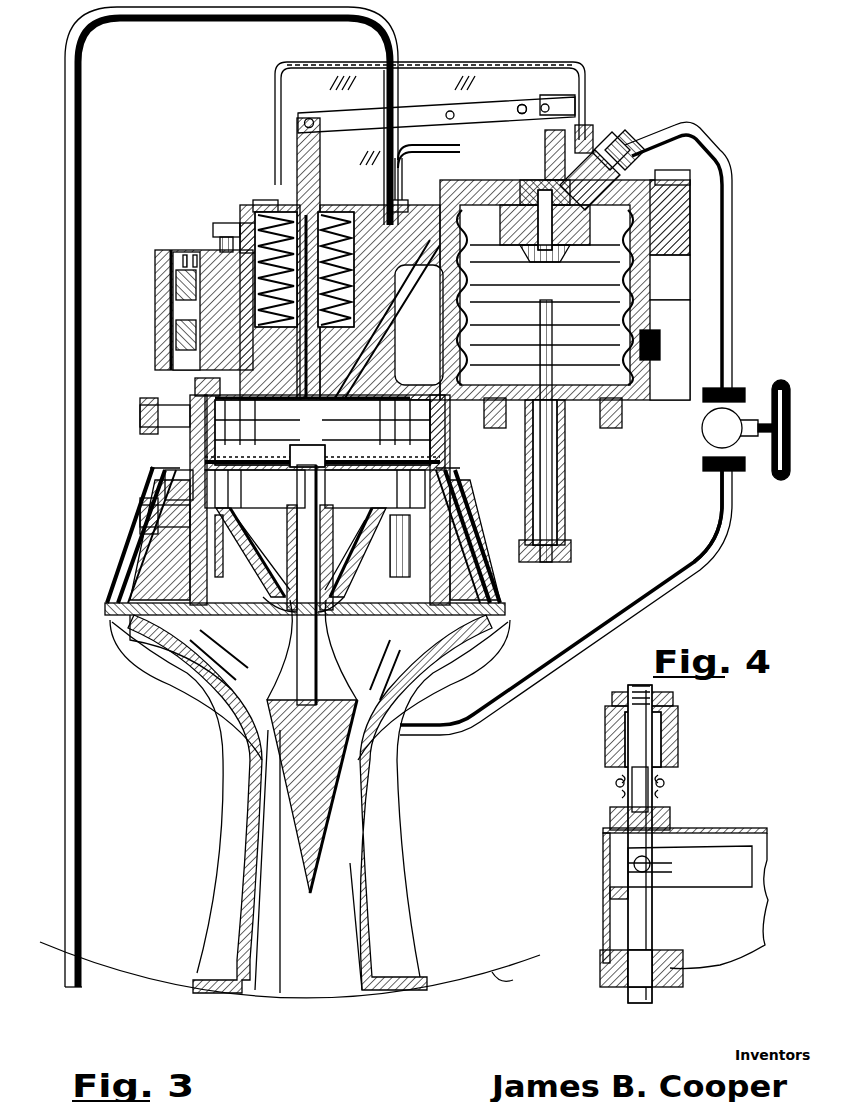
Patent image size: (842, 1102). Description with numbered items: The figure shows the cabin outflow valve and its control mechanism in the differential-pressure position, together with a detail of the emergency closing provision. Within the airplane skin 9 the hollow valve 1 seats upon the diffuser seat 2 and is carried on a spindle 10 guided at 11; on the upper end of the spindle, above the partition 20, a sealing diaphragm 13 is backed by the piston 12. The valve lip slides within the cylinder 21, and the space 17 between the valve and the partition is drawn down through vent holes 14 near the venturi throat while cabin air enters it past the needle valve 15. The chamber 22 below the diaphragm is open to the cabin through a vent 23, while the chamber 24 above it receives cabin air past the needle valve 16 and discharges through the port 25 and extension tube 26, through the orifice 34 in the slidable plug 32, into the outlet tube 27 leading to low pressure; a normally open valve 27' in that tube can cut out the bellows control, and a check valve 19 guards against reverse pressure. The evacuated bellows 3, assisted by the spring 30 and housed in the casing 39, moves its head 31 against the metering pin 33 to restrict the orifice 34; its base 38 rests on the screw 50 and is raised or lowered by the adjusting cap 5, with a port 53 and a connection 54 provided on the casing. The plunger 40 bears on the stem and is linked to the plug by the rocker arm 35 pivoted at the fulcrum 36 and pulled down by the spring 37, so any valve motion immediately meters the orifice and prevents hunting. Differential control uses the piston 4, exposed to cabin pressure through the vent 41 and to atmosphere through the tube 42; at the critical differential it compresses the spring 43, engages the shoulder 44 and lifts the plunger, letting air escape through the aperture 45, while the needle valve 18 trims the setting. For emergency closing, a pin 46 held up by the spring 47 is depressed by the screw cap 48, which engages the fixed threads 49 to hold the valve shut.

In FIG. 3, the outflow valve 1 is at (300, 775).
In FIG. 3, the diffuser seat 2 is at (240, 700).
In FIG. 3, the evacuated Sylphon bellows 3 is at (640, 370).
In FIG. 3, the piston 4 is at (196, 358).
In FIG. 3, the adjusting cap 5 is at (558, 475).
In FIG. 3, the skin of the airplane 9 is at (290, 807).
In FIG. 3, the spindle 10 is at (320, 525).
In FIG. 3, the spindle guide 11 is at (330, 580).
In FIG. 3, the piston 12 is at (260, 437).
In FIG. 3, the sealing diaphragm 13 is at (192, 452).
In FIG. 3, the vent holes 14 is at (255, 690).
In FIG. 3, the needle valve 15 is at (140, 512).
In FIG. 3, the needle valve 16 is at (140, 416).
In FIG. 3, the space above valve body 17 is at (210, 668).
In FIG. 3, the needle valve 18 is at (228, 222).
In FIG. 3, the check valve 19 is at (195, 388).
In FIG. 3, the partition 20 is at (380, 520).
In FIG. 3, the cylinder 21 is at (150, 560).
In FIG. 3, the chamber beneath diaphragm 22 is at (255, 489).
In FIG. 3, the vent 23 is at (190, 492).
In FIG. 3, the chamber above diaphragm 24 is at (325, 432).
In FIG. 3, the port 25 is at (382, 365).
In FIG. 3, the extension tube 26 is at (432, 150).
In FIG. 3, the outlet tube 27 is at (587, 428).
In FIG. 3, the normally open valve 27' is at (691, 501).
In FIG. 3, the spring 30 is at (645, 315).
In FIG. 3, the bellows head 31 is at (660, 225).
In FIG. 3, the slidable plug 32 is at (582, 75).
In FIG. 3, the metering pin 33 is at (572, 150).
In FIG. 3, the orifice 34 is at (582, 125).
In FIG. 3, the rocker arm 35 is at (358, 108).
In FIG. 4, the rocker arm 35 is at (695, 880).
In FIG. 3, the fulcrum 36 is at (520, 105).
In FIG. 3, the spring 37 is at (440, 125).
In FIG. 3, the base 38 is at (612, 395).
In FIG. 3, the casing 39 is at (703, 432).
In FIG. 3, the plunger 40 is at (300, 150).
In FIG. 4, the plunger 40 is at (630, 918).
In FIG. 3, the vent 41 is at (213, 320).
In FIG. 3, the tube 42 is at (81, 213).
In FIG. 3, the spring 43 is at (262, 202).
In FIG. 3, the shoulder 44 is at (372, 330).
In FIG. 3, the aperture 45 is at (380, 290).
In FIG. 4, the pin 46 is at (630, 786).
In FIG. 4, the spring 47 is at (668, 786).
In FIG. 4, the screw cap 48 is at (608, 726).
In FIG. 4, the fixed threads 49 is at (612, 822).
In FIG. 3, the screw 50 is at (528, 468).
In FIG. 3, the port 53 is at (645, 153).
In FIG. 3, the tube connection 54 is at (662, 348).